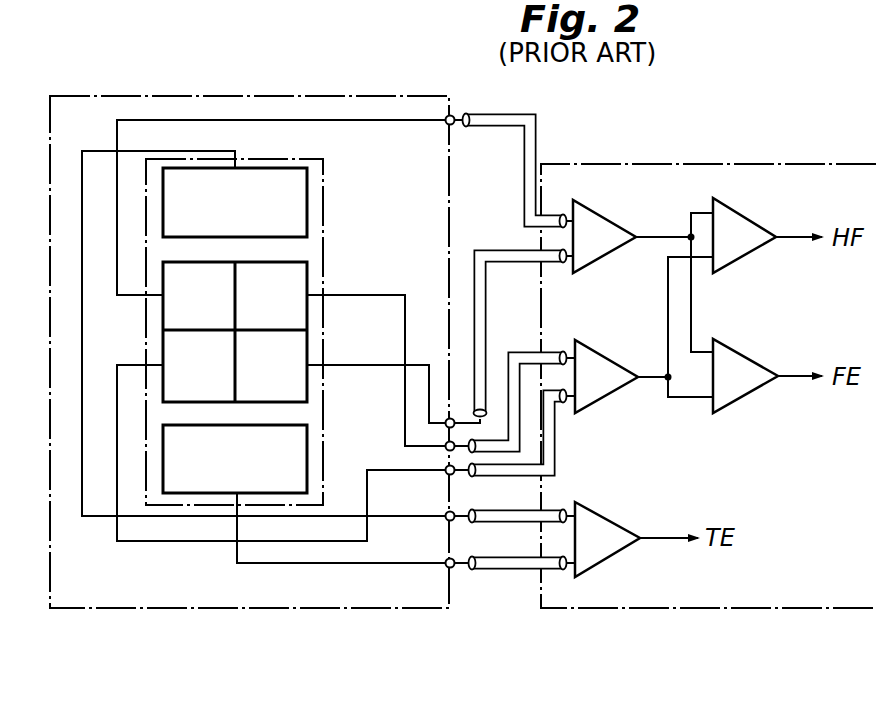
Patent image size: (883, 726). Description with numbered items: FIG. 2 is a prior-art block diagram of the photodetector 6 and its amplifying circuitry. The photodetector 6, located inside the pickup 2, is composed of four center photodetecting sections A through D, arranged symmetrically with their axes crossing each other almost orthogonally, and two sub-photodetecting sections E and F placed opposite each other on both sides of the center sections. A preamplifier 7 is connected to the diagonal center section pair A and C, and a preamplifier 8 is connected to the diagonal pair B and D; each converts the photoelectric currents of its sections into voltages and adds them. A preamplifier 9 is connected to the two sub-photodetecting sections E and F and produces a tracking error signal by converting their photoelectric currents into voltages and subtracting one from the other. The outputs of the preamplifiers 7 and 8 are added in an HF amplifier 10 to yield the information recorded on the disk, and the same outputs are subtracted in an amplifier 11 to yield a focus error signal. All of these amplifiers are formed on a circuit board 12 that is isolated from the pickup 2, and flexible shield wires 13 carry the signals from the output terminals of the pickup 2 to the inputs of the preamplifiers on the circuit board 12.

The pickup 2 is at (306, 96).
The photodetector 6 is at (323, 190).
The preamplifier 7 is at (613, 222).
The preamplifier 8 is at (612, 368).
The preamplifier 9 is at (615, 536).
The HF amplifier 10 is at (750, 232).
The amplifier 11 is at (752, 368).
The circuit board 12 is at (742, 164).
The flexible shield wires 13 is at (499, 113).